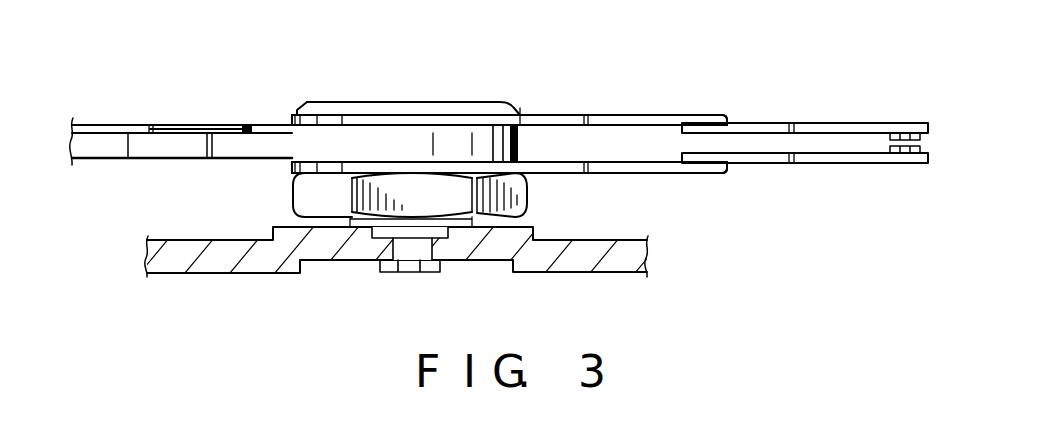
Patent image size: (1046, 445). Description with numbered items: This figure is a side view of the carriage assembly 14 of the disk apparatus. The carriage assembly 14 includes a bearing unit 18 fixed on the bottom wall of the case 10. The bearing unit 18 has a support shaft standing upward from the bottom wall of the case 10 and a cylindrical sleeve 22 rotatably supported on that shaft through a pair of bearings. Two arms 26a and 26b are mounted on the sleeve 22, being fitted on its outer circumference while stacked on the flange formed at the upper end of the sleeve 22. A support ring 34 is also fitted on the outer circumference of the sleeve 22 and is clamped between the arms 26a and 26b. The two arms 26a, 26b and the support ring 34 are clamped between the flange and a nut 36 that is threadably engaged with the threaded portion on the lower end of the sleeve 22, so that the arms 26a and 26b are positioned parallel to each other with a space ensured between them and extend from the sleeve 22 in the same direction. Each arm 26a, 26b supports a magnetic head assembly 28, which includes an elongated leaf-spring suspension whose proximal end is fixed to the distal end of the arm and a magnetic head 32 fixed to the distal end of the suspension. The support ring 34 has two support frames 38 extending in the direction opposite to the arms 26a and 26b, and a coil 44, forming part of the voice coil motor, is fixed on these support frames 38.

The case 10 is at (622, 262).
The carriage assembly 14 is at (586, 92).
The bearing unit 18 is at (365, 90).
The cylindrical sleeve 22 is at (428, 110).
The arm 26a is at (662, 126).
The arm 26b is at (670, 163).
The magnetic head assembly 28 is at (816, 102).
The magnetic head 32 is at (896, 133).
The support ring 34 is at (482, 128).
The nut 36 is at (527, 190).
The support frame 38 is at (187, 147).
The coil 44 is at (177, 127).